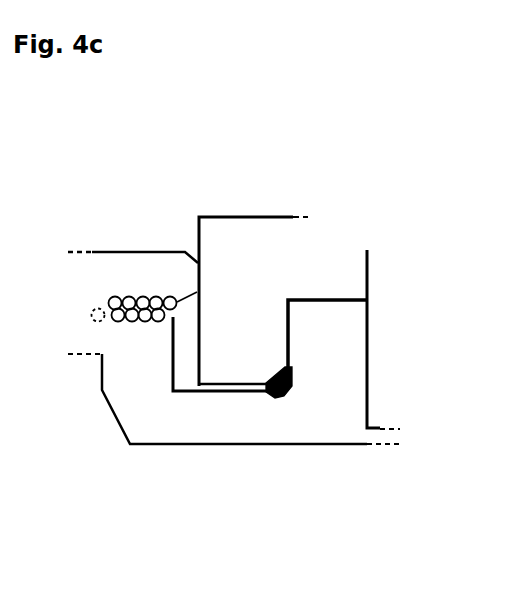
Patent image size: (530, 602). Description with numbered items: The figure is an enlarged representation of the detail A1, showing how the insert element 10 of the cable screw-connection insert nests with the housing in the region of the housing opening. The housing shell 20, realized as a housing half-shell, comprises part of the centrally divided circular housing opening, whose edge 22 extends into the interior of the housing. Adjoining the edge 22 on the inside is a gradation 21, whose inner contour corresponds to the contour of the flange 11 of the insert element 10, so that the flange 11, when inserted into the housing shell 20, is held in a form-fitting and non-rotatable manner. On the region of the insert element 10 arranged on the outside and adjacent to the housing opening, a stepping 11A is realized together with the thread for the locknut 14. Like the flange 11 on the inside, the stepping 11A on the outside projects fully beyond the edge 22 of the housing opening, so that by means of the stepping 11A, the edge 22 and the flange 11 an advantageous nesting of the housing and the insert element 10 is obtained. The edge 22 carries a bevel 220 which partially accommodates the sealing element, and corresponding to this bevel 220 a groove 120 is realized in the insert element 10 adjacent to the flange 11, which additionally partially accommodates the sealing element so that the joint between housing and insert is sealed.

The detail A1 is at (72, 158).
The insert element 10 is at (120, 388).
The flange 11 is at (337, 408).
The stepping 11A is at (177, 363).
The groove 120 is at (283, 396).
The locknut 14 is at (100, 250).
The housing shell 20 is at (212, 253).
The gradation 21 is at (330, 298).
The edge 22 is at (228, 384).
The bevel 220 is at (270, 373).